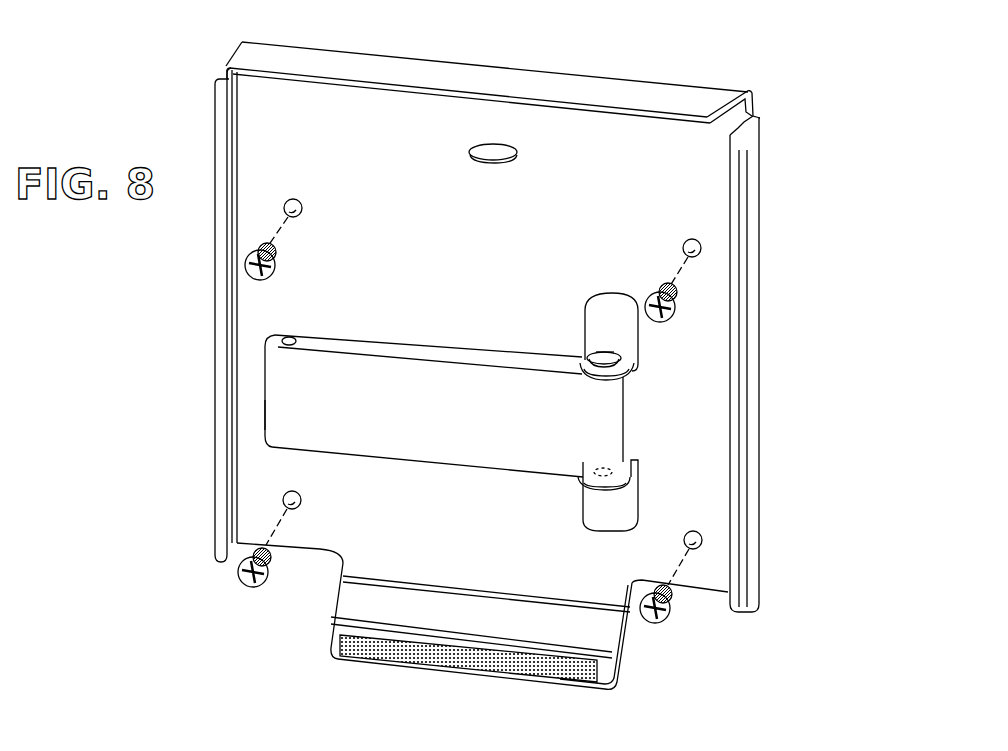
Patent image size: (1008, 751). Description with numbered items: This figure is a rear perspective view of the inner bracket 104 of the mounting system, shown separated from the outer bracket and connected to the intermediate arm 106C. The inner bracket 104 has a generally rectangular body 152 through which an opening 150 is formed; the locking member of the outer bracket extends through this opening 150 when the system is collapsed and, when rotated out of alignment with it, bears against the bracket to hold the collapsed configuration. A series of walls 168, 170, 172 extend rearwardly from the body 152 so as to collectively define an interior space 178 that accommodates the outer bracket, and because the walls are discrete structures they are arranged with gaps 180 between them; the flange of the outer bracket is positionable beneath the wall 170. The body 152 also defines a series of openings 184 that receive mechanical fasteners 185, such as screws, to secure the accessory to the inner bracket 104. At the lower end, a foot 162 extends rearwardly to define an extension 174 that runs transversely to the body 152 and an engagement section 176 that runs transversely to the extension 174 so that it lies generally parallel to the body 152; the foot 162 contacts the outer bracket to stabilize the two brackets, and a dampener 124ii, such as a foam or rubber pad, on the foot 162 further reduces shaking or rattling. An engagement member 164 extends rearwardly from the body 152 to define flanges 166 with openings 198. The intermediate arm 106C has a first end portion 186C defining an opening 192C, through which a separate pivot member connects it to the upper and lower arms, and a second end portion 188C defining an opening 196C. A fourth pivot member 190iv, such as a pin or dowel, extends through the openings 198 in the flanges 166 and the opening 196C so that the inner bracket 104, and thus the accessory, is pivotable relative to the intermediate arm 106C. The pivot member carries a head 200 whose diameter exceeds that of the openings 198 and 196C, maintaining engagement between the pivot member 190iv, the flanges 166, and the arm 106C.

The inner bracket 104 is at (492, 367).
The intermediate arm 106C is at (318, 433).
The dampener 124ii is at (510, 667).
The opening 150 is at (496, 152).
The body 152 is at (748, 91).
The foot 162 is at (640, 648).
The engagement member 164 is at (666, 412).
The flanges 166 is at (631, 370).
The wall 168 is at (222, 301).
The wall 170 is at (333, 58).
The wall 172 is at (755, 240).
The extension 174 is at (373, 600).
The engagement section 176 is at (335, 650).
The interior space 178 is at (453, 123).
The gaps 180 is at (225, 77).
The openings 184 is at (301, 204).
The mechanical fasteners 185 is at (277, 262).
The first end portion 186C is at (348, 403).
The second end portion 188C is at (603, 423).
The fourth pivot member 190iv is at (606, 348).
The opening 192C is at (293, 336).
The opening 196C is at (597, 468).
The openings 198 is at (642, 352).
The head 200 is at (588, 355).